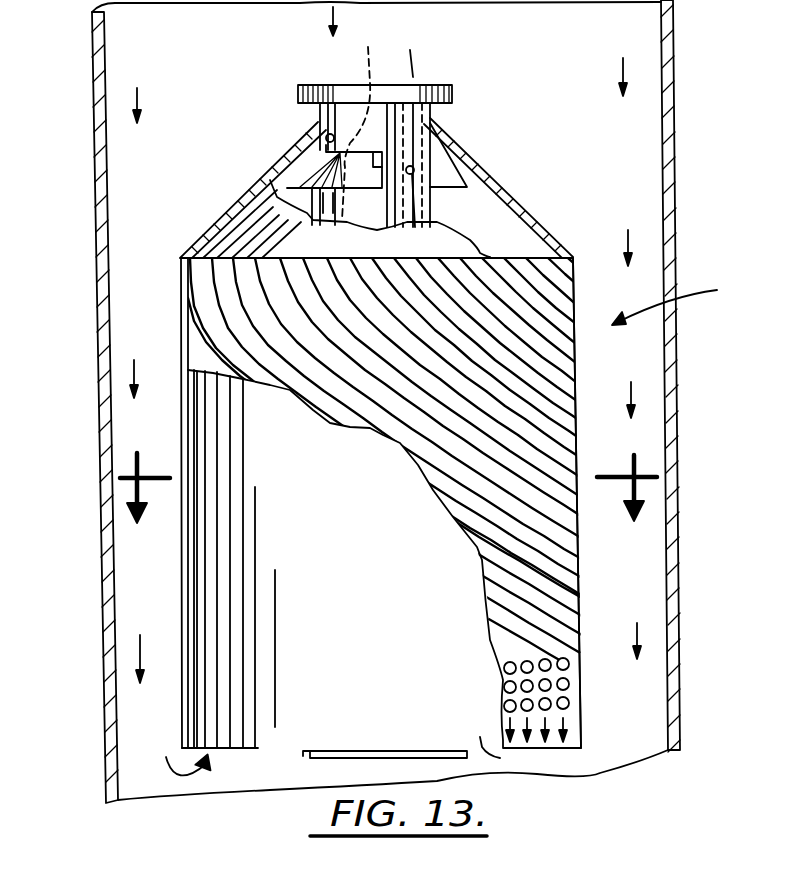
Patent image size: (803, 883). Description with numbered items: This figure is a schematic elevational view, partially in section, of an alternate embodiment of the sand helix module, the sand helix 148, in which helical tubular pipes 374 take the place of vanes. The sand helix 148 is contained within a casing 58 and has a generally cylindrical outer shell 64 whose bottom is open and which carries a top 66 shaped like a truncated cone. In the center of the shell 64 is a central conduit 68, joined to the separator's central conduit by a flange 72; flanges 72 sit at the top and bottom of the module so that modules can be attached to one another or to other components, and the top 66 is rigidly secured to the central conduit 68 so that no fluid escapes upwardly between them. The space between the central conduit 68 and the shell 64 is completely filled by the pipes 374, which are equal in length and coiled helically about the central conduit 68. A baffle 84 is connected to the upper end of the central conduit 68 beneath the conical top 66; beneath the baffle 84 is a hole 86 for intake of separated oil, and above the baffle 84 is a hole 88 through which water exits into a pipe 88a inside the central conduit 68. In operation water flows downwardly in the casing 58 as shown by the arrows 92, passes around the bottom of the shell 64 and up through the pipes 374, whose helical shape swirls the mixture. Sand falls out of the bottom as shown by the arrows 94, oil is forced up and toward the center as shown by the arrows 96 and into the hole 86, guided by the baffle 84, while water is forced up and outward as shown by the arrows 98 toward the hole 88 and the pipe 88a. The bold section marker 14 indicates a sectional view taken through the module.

The section line 14 is at (388, 509).
The casing 58 is at (668, 347).
The outer shell 64 is at (505, 756).
The top 66 is at (507, 192).
The central conduit 68 is at (333, 113).
The flange 72 is at (342, 90).
The baffle 84 is at (440, 167).
The hole 86 is at (435, 205).
The hole 88 is at (323, 135).
The pipe 88a is at (371, 113).
The arrows 92 is at (133, 102).
The arrows 94 is at (570, 722).
The arrows 96 is at (303, 205).
The arrows 98 is at (293, 173).
The sand helix 148 is at (687, 303).
The helical tubular pipes 374 is at (570, 594).